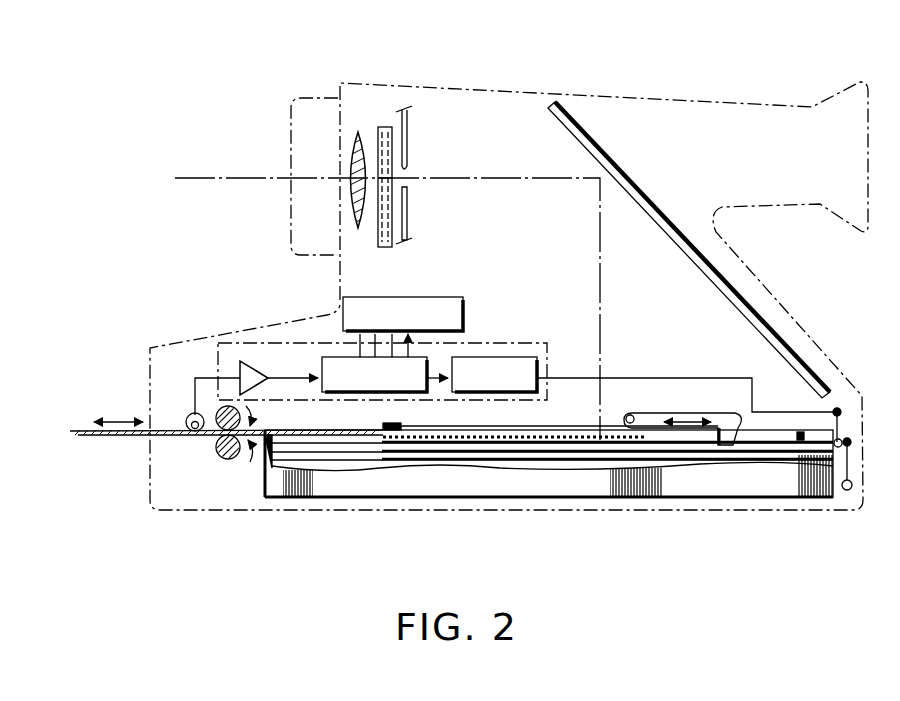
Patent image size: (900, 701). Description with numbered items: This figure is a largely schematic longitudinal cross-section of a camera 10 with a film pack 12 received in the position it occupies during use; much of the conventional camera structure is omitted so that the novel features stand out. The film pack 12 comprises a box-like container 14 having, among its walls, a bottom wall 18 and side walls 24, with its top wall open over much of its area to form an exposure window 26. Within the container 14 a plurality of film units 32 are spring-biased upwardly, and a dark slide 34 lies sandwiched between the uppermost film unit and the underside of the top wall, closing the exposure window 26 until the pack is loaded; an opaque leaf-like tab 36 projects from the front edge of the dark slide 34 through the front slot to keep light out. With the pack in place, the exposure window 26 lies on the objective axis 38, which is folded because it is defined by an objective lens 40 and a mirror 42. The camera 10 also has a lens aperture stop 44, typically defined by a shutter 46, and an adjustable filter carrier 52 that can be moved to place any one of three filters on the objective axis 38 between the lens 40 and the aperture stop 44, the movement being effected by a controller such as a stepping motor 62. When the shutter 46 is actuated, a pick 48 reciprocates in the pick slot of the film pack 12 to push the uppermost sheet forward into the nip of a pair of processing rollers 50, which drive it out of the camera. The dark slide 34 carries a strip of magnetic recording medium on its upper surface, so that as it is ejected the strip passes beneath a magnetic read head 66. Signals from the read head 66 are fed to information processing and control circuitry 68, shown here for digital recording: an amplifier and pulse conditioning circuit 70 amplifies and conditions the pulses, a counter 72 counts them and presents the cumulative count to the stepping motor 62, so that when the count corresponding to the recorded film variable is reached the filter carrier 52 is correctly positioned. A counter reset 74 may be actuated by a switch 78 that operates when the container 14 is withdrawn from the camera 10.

The camera 10 is at (660, 92).
The film pack 12 is at (503, 469).
The container 14 is at (353, 498).
The bottom wall 18 is at (528, 498).
The side walls 24 is at (573, 490).
The exposure window 26 is at (575, 437).
The film units 32 is at (552, 478).
The dark slide 34 is at (132, 435).
The tab 36 is at (88, 432).
The objective axis 38 is at (213, 178).
The objective lens 40 is at (348, 170).
The mirror 42 is at (576, 142).
The lens aperture stop 44 is at (405, 170).
The shutter 46 is at (408, 134).
The pick 48 is at (653, 414).
The processing rollers 50 is at (216, 440).
The filter carrier 52 is at (385, 247).
The stepping motor 62 is at (450, 297).
The magnetic read head 66 is at (189, 415).
The control circuitry 68 is at (504, 343).
The amplifier and pulse conditioning circuit 70 is at (258, 368).
The counter 72 is at (378, 394).
The counter reset 74 is at (540, 368).
The switch 78 is at (855, 460).